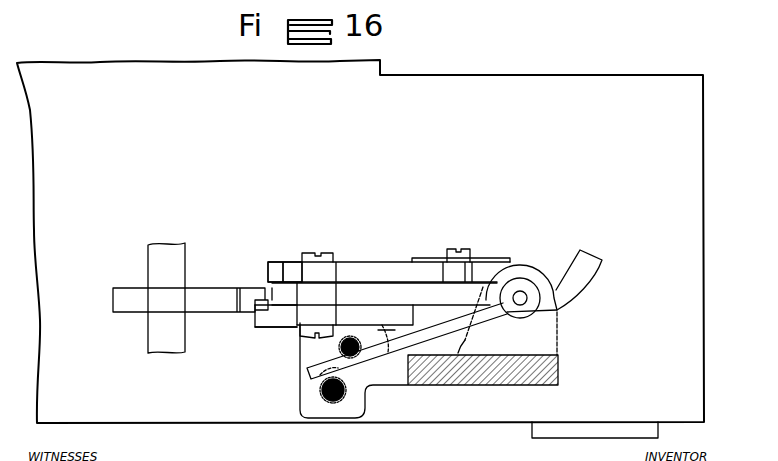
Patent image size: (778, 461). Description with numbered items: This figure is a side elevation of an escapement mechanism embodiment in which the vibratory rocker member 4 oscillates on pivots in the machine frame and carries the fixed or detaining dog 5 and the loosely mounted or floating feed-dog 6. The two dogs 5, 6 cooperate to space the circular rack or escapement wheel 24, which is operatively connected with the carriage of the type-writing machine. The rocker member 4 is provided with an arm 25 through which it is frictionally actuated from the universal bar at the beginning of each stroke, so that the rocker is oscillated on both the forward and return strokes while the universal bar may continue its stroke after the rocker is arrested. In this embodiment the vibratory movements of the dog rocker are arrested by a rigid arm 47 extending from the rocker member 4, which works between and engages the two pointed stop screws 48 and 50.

The vibratory rocker member 4 is at (521, 291).
The fixed or detaining dog 5 is at (278, 318).
The loosely mounted or floating feed-dog 6 is at (278, 264).
The escapement wheel 24 is at (207, 300).
The arm 25 is at (582, 272).
The rigid arm 47 is at (400, 345).
The pointed stop screw 48 is at (333, 403).
The pointed stop screw 50 is at (353, 338).